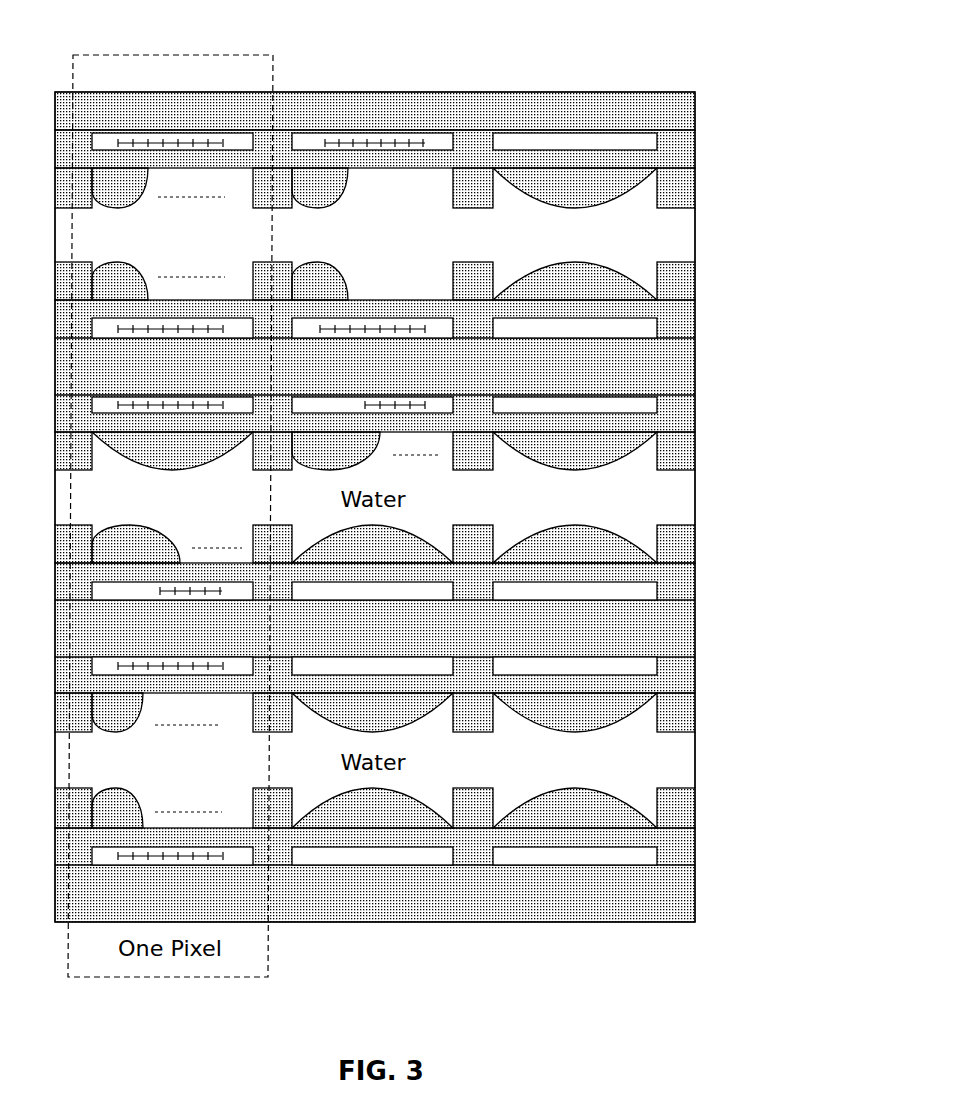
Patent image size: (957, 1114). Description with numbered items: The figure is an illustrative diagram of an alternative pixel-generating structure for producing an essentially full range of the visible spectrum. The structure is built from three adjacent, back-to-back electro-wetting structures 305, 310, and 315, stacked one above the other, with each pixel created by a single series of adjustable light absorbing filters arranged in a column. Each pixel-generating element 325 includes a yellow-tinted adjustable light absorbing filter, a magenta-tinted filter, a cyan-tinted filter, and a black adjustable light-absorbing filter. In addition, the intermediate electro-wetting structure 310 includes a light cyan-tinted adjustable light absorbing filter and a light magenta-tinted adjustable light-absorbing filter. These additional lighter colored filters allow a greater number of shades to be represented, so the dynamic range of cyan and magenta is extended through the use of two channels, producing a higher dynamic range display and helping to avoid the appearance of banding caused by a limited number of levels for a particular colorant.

The pixel-generating element 325 is at (194, 88).
The electro-wetting structure 315 is at (719, 218).
The intermediate electro-wetting structure 310 is at (719, 488).
The electro-wetting structure 305 is at (719, 746).